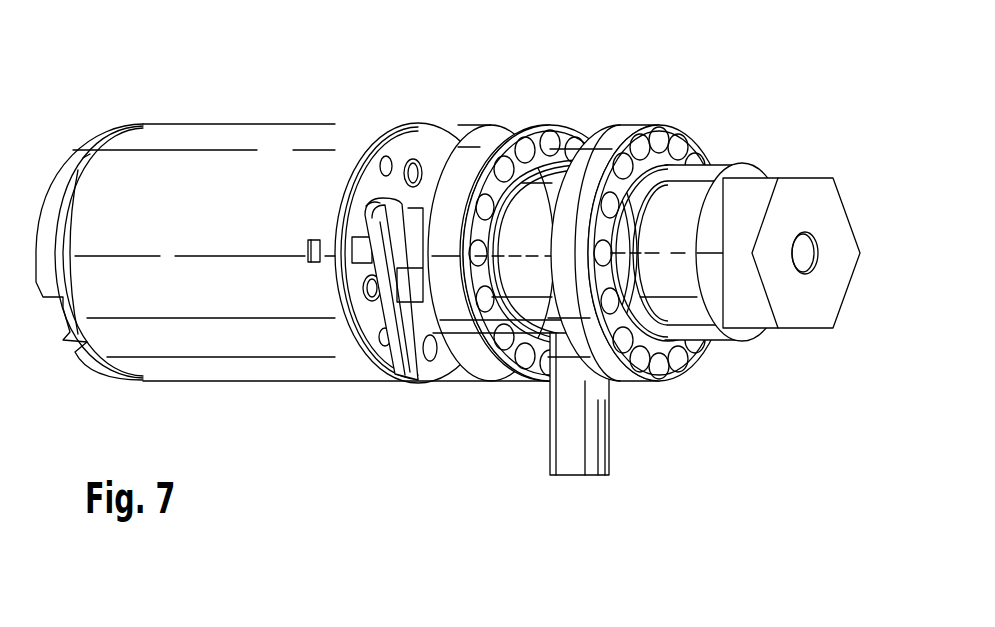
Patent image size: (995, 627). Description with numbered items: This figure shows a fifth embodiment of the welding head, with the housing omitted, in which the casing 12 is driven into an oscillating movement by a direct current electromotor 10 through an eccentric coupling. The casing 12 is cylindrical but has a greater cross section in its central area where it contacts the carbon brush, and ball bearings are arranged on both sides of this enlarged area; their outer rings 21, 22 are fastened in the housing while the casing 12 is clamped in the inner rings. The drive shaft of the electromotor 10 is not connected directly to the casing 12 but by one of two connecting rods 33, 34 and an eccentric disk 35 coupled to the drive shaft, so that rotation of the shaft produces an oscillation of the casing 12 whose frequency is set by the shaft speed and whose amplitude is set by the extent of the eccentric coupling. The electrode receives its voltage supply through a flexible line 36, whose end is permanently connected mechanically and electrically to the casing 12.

The direct current electromotor 10 is at (235, 178).
The casing 12 is at (512, 283).
The outer ring 21 is at (620, 132).
The outer ring 22 is at (496, 140).
The connecting rod 33 is at (436, 370).
The connecting rod 34 is at (400, 204).
The eccentric disk 35 is at (395, 362).
The flexible line 36 is at (592, 433).